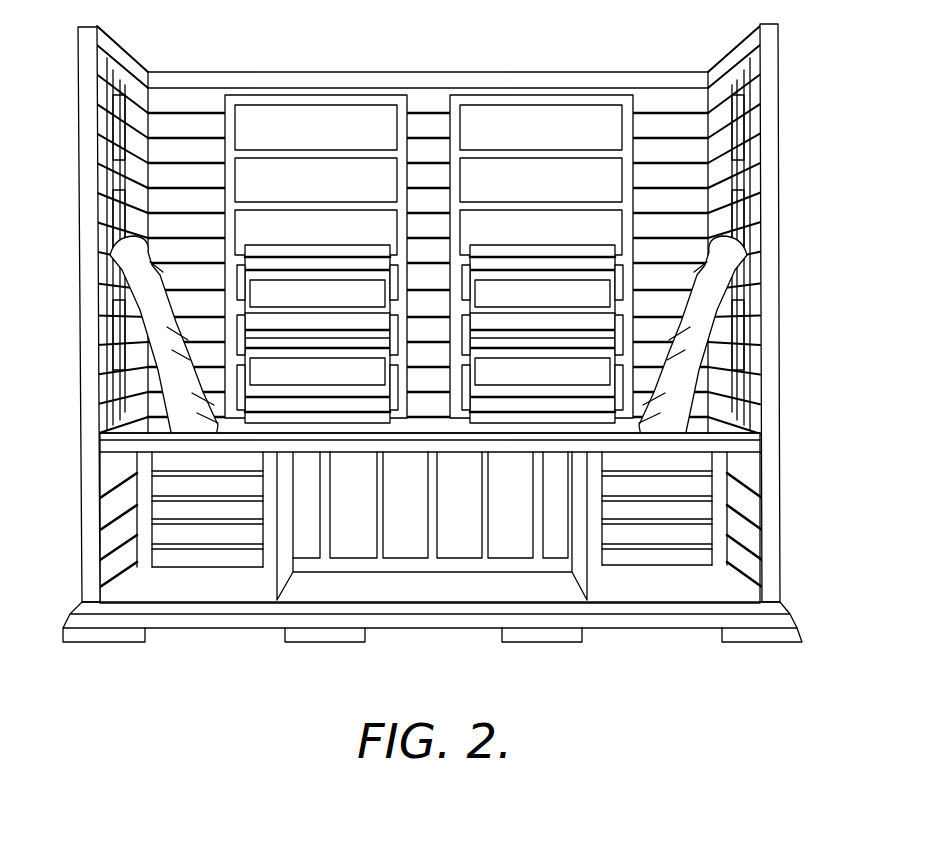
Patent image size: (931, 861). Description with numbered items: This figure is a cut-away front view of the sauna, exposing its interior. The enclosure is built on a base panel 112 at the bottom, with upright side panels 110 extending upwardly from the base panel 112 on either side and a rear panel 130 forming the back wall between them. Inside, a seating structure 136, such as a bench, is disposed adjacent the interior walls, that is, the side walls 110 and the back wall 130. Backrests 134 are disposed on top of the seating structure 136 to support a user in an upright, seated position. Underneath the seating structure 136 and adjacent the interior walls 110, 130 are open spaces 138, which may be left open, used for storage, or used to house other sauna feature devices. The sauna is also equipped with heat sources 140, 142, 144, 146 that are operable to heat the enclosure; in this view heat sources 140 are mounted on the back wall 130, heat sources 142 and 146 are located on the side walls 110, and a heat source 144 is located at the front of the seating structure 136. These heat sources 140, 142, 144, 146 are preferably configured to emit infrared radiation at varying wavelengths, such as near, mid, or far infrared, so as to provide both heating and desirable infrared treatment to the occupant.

The side panels 110 is at (82, 438).
The base panel 112 is at (440, 593).
The rear panel 130 is at (206, 100).
The backrests 134 is at (106, 332).
The seating structures 136 is at (160, 455).
The open spaces 138 is at (168, 557).
The heat source 140 is at (345, 118).
The heat source 142 is at (738, 178).
The heat source 144 is at (350, 548).
The heat source 146 is at (752, 398).